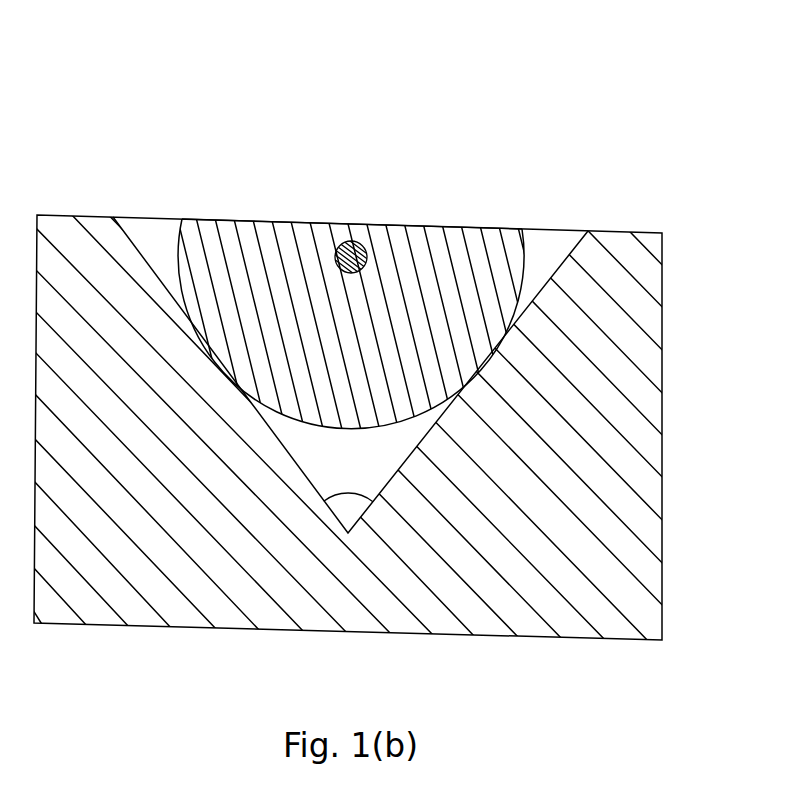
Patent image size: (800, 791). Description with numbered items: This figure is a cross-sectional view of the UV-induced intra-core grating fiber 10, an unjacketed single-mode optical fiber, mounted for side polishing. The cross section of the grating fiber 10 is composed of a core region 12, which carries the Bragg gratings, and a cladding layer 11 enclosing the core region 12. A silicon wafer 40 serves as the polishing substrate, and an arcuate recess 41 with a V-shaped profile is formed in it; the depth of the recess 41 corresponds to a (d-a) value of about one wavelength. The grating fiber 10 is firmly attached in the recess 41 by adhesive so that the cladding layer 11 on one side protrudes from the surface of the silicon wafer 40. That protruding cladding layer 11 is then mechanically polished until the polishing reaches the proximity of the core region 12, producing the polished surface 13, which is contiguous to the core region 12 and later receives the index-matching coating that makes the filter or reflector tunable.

The UV-induced intra-core grating fiber 10 is at (372, 233).
The cladding layer 11 is at (372, 283).
The core region 12 is at (372, 209).
The polished surface 13 is at (352, 167).
The silicon wafer 40 is at (662, 423).
The arcuate recess 41 is at (558, 275).